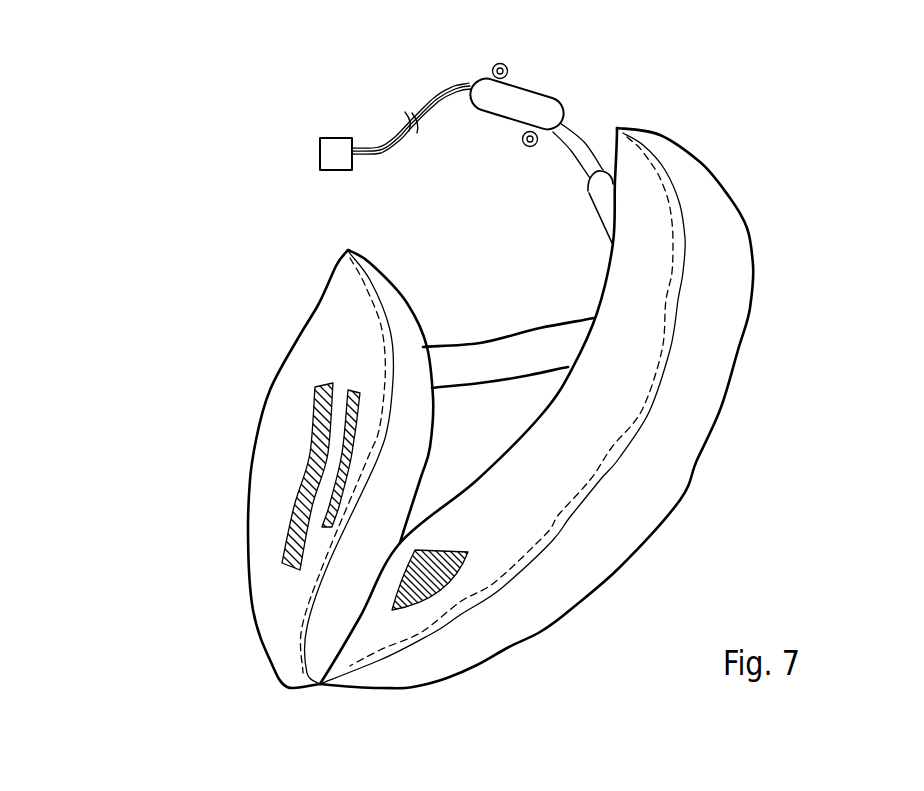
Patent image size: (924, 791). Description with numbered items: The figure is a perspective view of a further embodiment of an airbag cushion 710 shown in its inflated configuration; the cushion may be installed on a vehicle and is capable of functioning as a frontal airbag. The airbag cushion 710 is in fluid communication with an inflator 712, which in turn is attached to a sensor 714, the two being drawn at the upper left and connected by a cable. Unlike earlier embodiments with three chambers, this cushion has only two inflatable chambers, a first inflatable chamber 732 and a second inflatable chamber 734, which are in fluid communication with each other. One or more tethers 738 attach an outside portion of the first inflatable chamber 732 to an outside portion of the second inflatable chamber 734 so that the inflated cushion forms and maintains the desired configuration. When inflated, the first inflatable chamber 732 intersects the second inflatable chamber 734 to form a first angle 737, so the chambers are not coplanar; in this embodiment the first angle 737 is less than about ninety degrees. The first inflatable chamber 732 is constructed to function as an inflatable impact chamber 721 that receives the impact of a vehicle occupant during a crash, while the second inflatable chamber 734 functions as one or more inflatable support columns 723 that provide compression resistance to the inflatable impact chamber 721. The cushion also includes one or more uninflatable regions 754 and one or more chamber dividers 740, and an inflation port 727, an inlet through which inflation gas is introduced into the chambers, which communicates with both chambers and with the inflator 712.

The airbag cushion 710 is at (814, 231).
The inflator 712 is at (523, 96).
The sensor 714 is at (327, 155).
The inflatable impact chamber 721 is at (262, 483).
The inflatable support columns 723 is at (705, 408).
The inflation port 727 is at (588, 190).
The first inflatable chamber 732 is at (300, 437).
The second inflatable chamber 734 is at (660, 477).
The first angle 737 is at (398, 548).
The tethers 738 is at (510, 347).
The chamber dividers 740 is at (351, 387).
The uninflatable regions 754 is at (437, 590).